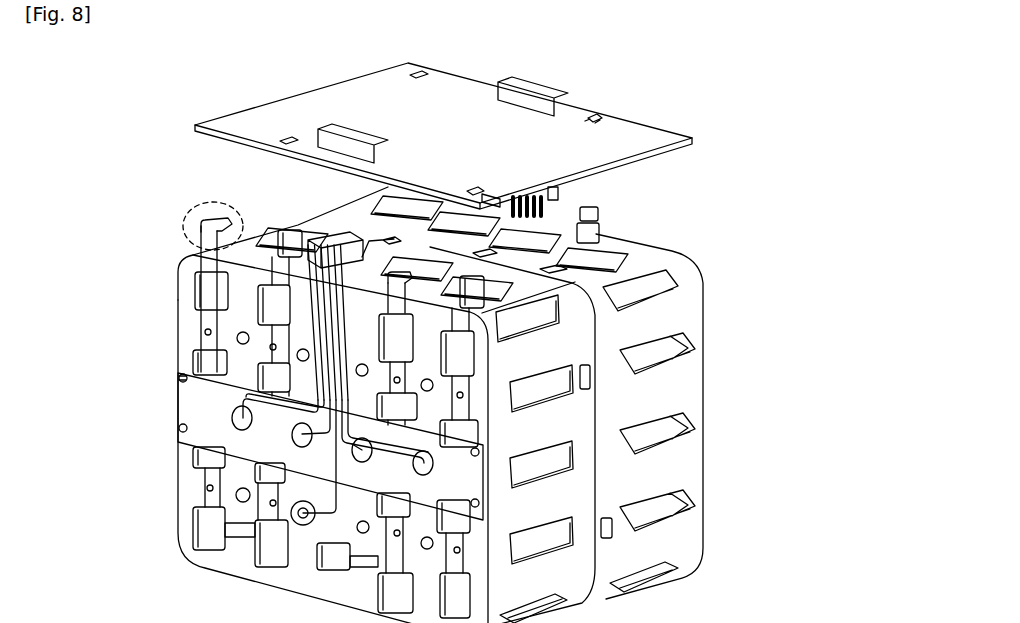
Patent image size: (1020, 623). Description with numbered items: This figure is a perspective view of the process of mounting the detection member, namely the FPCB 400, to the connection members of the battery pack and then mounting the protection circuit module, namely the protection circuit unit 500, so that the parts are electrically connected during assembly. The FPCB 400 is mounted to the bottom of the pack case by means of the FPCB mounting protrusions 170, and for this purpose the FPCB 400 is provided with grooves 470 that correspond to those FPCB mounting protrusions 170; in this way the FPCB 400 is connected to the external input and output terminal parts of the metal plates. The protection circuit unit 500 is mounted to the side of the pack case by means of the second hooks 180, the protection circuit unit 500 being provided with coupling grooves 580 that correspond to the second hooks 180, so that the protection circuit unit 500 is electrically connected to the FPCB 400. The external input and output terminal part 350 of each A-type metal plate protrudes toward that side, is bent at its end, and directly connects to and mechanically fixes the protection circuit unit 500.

The protection circuit unit 500 is at (637, 120).
The coupling grooves 580 is at (598, 117).
The second hooks 180 is at (594, 207).
The external input and output terminal part 350 is at (195, 212).
The grooves 470 is at (179, 371).
The FPCB mounting protrusions 170 is at (180, 378).
The FPCB 400 is at (178, 406).